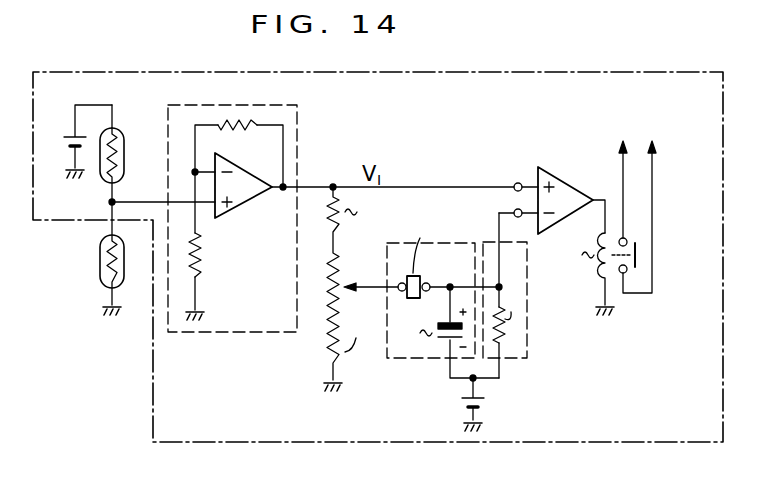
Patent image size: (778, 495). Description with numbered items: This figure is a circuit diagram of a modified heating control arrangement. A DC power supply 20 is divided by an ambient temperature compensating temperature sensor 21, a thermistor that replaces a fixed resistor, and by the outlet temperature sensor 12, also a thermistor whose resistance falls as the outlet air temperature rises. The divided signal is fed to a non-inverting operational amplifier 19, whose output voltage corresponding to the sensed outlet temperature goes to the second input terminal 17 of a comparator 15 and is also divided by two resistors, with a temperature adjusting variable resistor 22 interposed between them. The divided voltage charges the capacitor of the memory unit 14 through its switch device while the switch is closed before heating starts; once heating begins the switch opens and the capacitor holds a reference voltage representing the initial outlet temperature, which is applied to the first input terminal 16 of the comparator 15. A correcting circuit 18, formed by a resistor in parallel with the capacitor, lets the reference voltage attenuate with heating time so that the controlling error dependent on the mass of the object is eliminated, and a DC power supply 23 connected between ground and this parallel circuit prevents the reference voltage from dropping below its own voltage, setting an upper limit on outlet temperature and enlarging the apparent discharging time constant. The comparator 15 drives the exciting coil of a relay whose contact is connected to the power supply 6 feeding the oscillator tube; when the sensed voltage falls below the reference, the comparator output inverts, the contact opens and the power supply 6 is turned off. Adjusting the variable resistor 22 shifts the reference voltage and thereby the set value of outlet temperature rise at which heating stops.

The power supply 6 is at (626, 192).
The outlet temperature sensor 12 is at (100, 262).
The memory unit 14 is at (405, 360).
The comparator 15 is at (563, 181).
The first input terminal 16 is at (514, 210).
The second input terminal 17 is at (519, 181).
The correcting circuit 18 is at (518, 361).
The non-inverting operational amplifier 19 is at (300, 137).
The DC power supply 20 is at (66, 140).
The ambient temperature compensating temperature sensor 21 is at (122, 134).
The variable resistor 22 is at (330, 286).
The DC power supply 23 is at (459, 404).